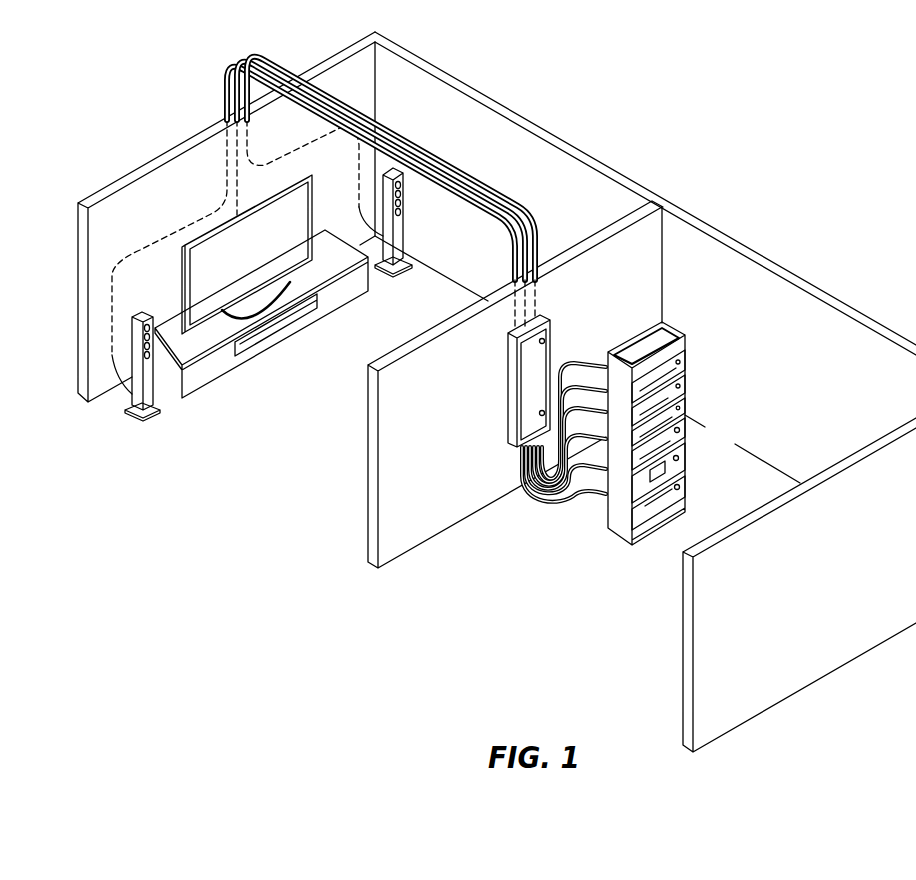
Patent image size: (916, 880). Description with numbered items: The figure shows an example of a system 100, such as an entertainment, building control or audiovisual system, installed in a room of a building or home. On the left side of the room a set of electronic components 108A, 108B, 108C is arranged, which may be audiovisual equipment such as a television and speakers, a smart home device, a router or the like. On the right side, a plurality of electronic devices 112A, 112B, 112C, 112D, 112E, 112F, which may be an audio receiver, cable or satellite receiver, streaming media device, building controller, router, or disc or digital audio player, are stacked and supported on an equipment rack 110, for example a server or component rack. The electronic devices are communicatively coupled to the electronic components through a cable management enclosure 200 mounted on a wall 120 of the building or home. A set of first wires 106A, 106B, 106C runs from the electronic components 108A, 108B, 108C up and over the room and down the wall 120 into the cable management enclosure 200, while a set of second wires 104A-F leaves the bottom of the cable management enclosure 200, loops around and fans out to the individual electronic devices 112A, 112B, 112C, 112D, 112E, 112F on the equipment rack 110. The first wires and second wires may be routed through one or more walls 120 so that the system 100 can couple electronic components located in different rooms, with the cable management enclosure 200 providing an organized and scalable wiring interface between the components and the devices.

The system 100 is at (708, 155).
The second wires 104A-F is at (527, 500).
The first wire 106A is at (409, 150).
The first wire 106B is at (384, 122).
The first wire 106C is at (438, 172).
The electronic component 108A is at (186, 293).
The electronic component 108B is at (405, 214).
The electronic component 108C is at (156, 388).
The equipment rack 110 is at (676, 426).
The electronic device 112A is at (686, 367).
The electronic device 112B is at (686, 384).
The electronic device 112C is at (686, 405).
The electronic device 112D is at (686, 427).
The electronic device 112E is at (686, 458).
The electronic device 112F is at (686, 487).
The wall 120 is at (398, 533).
The cable management enclosure 200 is at (552, 336).